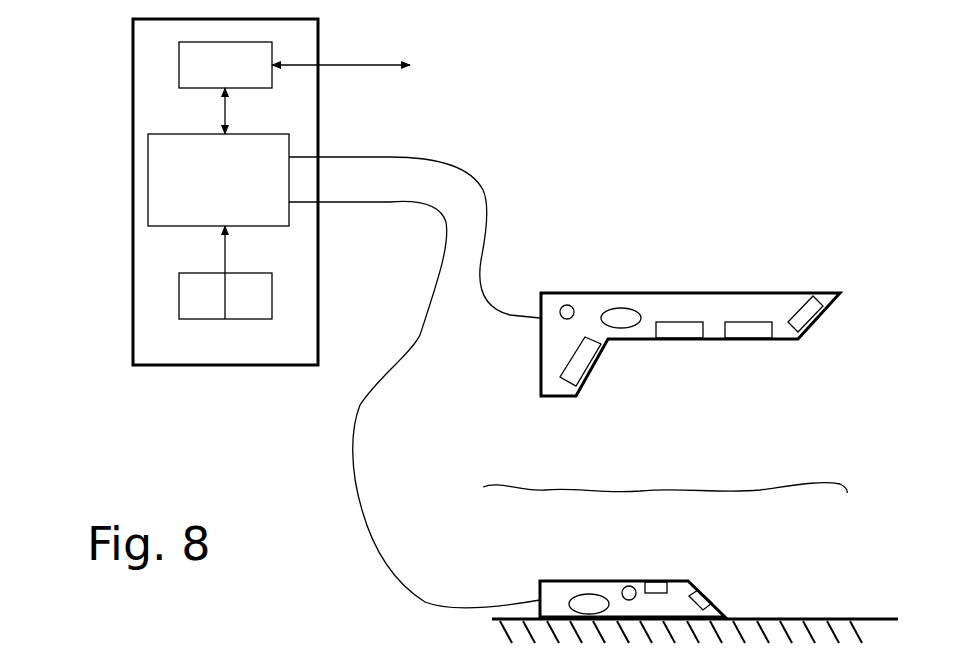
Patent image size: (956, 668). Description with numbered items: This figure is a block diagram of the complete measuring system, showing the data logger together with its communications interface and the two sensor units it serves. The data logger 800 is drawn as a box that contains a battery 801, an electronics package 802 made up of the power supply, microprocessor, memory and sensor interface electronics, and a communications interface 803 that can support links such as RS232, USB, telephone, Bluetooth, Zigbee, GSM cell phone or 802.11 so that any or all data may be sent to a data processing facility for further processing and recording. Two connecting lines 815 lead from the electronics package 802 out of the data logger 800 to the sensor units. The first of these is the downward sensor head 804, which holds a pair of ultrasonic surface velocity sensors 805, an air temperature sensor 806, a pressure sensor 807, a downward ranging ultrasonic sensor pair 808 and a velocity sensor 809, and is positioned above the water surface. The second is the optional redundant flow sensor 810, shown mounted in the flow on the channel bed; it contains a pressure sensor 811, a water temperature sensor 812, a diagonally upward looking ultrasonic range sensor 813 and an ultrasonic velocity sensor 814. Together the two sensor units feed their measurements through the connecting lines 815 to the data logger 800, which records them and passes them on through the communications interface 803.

The data logger 800 is at (247, 367).
The battery 801 is at (178, 292).
The electronics package 802 is at (168, 180).
The communications interface 803 is at (178, 67).
The downward sensor head 804 is at (558, 338).
The ultrasonic surface velocity sensors 805 is at (587, 362).
The air temperature sensor 806 is at (563, 303).
The pressure sensor 807 is at (619, 316).
The downward ranging ultrasonic sensor pair 808 is at (688, 320).
The velocity sensor 809 is at (812, 310).
The redundant flow sensor 810 is at (552, 597).
The pressure sensor 811 is at (590, 607).
The water temperature sensor 812 is at (632, 590).
The diagonally upward looking ultrasonic range sensor 813 is at (657, 588).
The ultrasonic velocity sensor 814 is at (699, 598).
The cables 815 is at (418, 190).